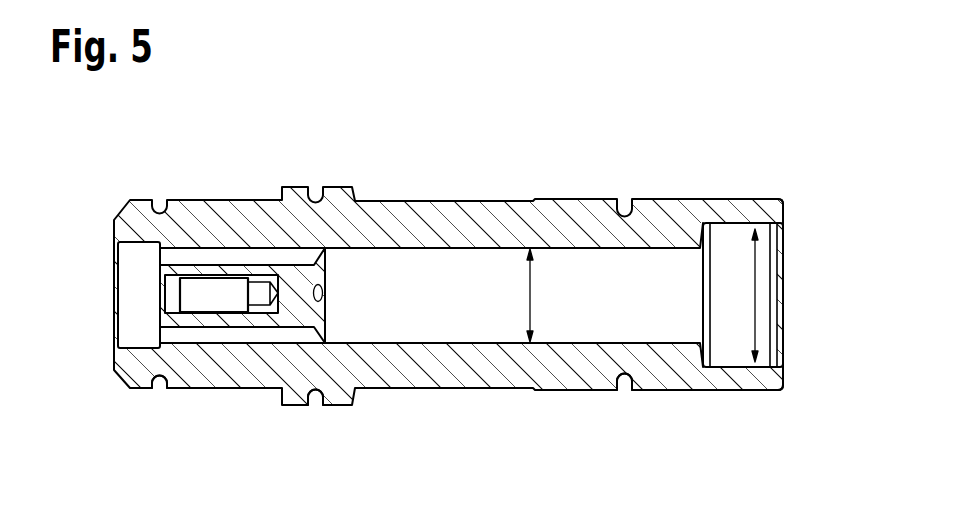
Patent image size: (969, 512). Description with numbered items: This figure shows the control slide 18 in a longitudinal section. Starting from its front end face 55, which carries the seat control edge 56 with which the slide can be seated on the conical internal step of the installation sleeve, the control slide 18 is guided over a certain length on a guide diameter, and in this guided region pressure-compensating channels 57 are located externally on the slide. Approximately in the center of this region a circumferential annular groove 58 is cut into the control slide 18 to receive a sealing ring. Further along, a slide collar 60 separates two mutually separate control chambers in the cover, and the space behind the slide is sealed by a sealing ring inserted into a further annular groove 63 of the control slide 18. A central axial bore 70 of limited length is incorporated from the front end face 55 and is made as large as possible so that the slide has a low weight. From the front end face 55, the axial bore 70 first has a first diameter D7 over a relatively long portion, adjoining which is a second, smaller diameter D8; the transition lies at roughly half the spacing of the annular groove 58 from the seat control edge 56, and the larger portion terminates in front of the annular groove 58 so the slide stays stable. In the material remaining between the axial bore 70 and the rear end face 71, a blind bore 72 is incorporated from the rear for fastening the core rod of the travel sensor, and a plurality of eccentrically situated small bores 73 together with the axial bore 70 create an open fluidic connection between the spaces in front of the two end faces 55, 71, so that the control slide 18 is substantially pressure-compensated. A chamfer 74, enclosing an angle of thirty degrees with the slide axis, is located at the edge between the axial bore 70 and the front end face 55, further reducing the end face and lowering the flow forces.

The control slide 18 is at (470, 176).
The front end face 55 is at (789, 199).
The seat control edge 56 is at (783, 224).
The pressure-compensating channels 57 is at (683, 199).
The annular groove 58 is at (625, 391).
The slide collar 60 is at (337, 392).
The annular groove 63 is at (162, 389).
The central axial bore 70 is at (457, 313).
The rear end face 71 is at (113, 226).
The blind bore 72 is at (197, 292).
The small bores 73 is at (250, 255).
The chamfer 74 is at (788, 363).
The first diameter D7 is at (757, 298).
The second diameter D8 is at (532, 295).